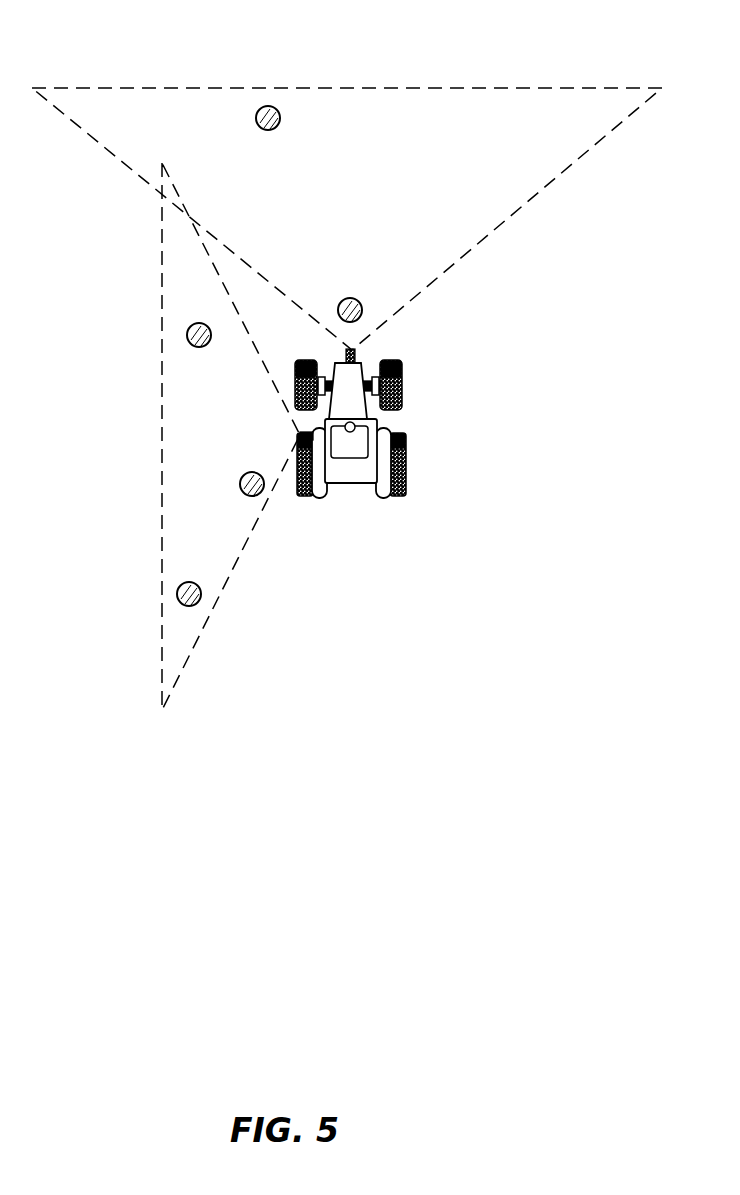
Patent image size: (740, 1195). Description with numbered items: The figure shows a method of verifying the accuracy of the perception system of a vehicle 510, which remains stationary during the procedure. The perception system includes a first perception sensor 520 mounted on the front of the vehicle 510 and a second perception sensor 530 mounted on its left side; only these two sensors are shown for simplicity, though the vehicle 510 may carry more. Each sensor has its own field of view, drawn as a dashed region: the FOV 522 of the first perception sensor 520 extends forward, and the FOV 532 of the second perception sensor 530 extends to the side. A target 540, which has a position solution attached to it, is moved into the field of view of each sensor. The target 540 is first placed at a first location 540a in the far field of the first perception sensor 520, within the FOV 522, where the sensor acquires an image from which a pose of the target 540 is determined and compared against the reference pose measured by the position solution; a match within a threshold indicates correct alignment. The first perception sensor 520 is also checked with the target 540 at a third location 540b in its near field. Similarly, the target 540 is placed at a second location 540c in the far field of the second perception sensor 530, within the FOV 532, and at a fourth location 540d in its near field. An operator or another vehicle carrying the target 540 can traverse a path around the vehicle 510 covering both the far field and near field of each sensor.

The vehicle 510 is at (345, 387).
The first perception sensor 520 is at (345, 353).
The FOV of the first perception sensor 522 is at (462, 210).
The second perception sensor 530 is at (302, 435).
The FOV of the second perception sensor 532 is at (207, 547).
The target 540 is at (178, 594).
The first location 540a is at (276, 106).
The third location 540b is at (361, 318).
The second location 540c is at (188, 337).
The fourth location 540d is at (260, 493).